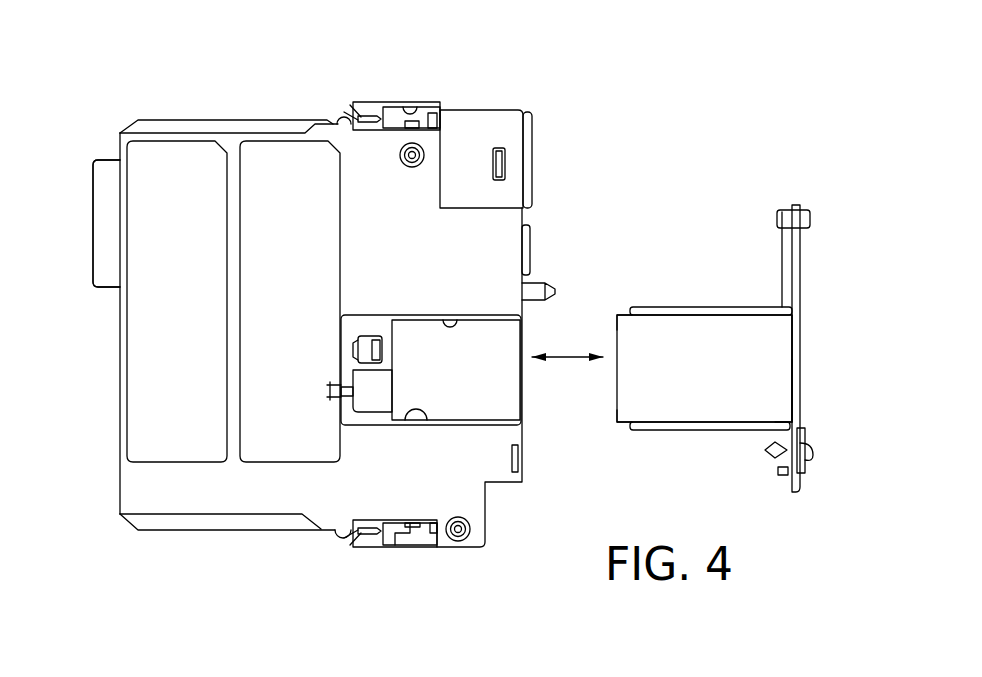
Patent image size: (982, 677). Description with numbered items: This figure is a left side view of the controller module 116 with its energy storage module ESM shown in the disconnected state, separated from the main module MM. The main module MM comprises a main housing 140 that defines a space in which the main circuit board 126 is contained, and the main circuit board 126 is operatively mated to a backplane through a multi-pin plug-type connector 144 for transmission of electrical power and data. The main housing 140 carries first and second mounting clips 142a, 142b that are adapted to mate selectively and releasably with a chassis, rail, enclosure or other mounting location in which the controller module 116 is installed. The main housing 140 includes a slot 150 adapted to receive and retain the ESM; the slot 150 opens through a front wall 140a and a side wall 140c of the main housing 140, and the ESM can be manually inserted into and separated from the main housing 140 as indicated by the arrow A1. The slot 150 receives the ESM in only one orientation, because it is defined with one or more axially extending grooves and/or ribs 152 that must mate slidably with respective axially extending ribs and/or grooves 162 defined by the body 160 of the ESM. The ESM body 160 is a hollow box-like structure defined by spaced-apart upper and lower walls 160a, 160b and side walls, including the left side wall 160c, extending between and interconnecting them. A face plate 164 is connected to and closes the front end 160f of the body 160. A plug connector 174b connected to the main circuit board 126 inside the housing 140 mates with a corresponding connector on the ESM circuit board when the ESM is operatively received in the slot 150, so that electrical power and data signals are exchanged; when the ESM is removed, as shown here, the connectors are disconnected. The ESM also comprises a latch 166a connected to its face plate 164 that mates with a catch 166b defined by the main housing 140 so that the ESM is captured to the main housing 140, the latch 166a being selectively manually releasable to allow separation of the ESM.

The controller module 116 is at (540, 103).
The main module MM is at (290, 112).
The multi-pin plug-type connector 144 is at (103, 168).
The main housing 140 is at (180, 172).
The front wall 140a is at (530, 163).
The side wall 140c is at (417, 217).
The first mounting clip 142a is at (367, 103).
The second mounting clip 142b is at (367, 552).
The main circuit board 126 is at (385, 325).
The plug connector 174b is at (362, 335).
The slot 150 is at (490, 395).
The mechanical features 152 is at (455, 318).
The catch 166b is at (512, 458).
The arrow A1 is at (568, 360).
The energy storage module ESM is at (716, 367).
The ESM body 160 is at (663, 330).
The upper wall 160a is at (627, 313).
The lower wall 160b is at (622, 428).
The left side wall 160c is at (768, 386).
The front end 160f is at (790, 340).
The mechanical features 162 is at (762, 308).
The face plate 164 is at (802, 272).
The latch 166a is at (780, 462).